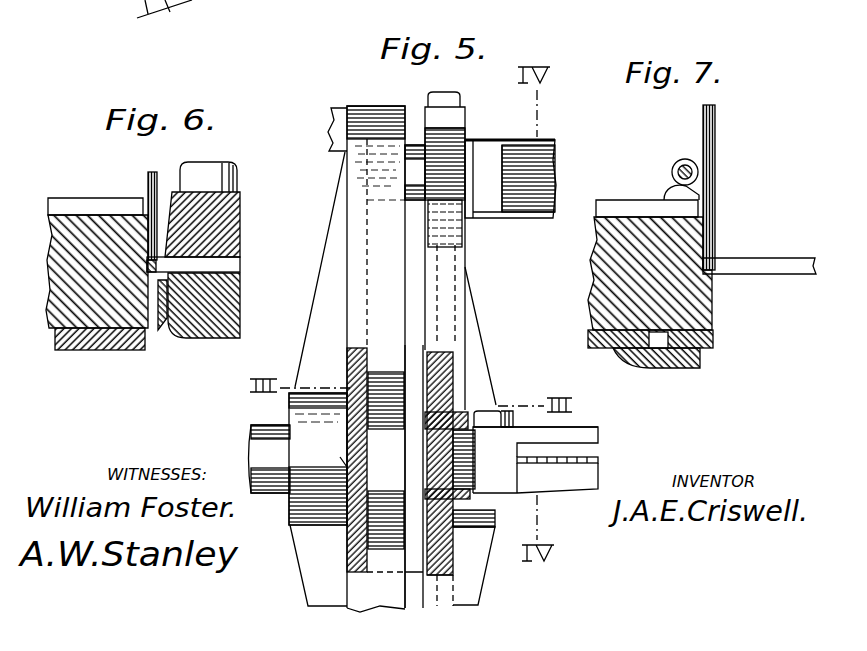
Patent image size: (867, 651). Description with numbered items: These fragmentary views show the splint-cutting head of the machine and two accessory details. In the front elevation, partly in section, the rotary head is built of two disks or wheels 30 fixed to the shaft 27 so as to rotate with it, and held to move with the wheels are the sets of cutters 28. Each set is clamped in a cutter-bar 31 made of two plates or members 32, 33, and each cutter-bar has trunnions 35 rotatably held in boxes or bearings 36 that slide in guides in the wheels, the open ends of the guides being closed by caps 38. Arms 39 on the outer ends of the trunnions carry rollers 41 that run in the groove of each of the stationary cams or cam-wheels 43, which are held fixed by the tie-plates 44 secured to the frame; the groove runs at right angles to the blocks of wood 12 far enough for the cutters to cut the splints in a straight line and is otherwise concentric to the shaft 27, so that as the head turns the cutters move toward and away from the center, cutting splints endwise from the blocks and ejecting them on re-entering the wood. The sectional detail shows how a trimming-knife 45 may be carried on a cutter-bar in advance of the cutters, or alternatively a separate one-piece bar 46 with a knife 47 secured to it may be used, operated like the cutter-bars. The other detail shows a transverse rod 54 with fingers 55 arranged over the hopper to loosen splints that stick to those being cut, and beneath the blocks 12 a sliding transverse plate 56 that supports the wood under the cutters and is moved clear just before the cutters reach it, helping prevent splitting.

In FIG. 6, the blocks of wood 12 is at (67, 308).
In FIG. 7, the blocks of wood 12 is at (603, 306).
In FIG. 5, the shaft 27 is at (258, 440).
In FIG. 5, the sets of cutters 28 is at (600, 459).
In FIG. 6, the sets of cutters 28 is at (231, 265).
In FIG. 7, the sets of cutters 28 is at (775, 258).
In FIG. 5, the disks or wheels 30 is at (455, 142).
In FIG. 5, the cutter-bar 31 is at (546, 410).
In FIG. 6, the cutter-bar 31 is at (228, 179).
In FIG. 5, the plate or member 32 is at (600, 433).
In FIG. 6, the plate or member 32 is at (242, 225).
In FIG. 5, the plate or member 33 is at (586, 478).
In FIG. 6, the plate or member 33 is at (241, 302).
In FIG. 5, the trunnions 35 is at (458, 462).
In FIG. 5, the boxes or bearings 36 is at (475, 411).
In FIG. 5, the caps 38 is at (457, 118).
In FIG. 5, the arms 39 is at (417, 371).
In FIG. 5, the rollers 41 is at (389, 437).
In FIG. 5, the cams or cam-wheels 43 is at (394, 101).
In FIG. 5, the tie-plates 44 is at (333, 108).
In FIG. 6, the trimming-knife 45 is at (166, 331).
In FIG. 5, the bar 46 is at (522, 218).
In FIG. 5, the knife 47 is at (546, 142).
In FIG. 7, the transverse rod 54 is at (683, 160).
In FIG. 7, the fingers 55 is at (672, 187).
In FIG. 7, the sliding transverse plate 56 is at (716, 345).